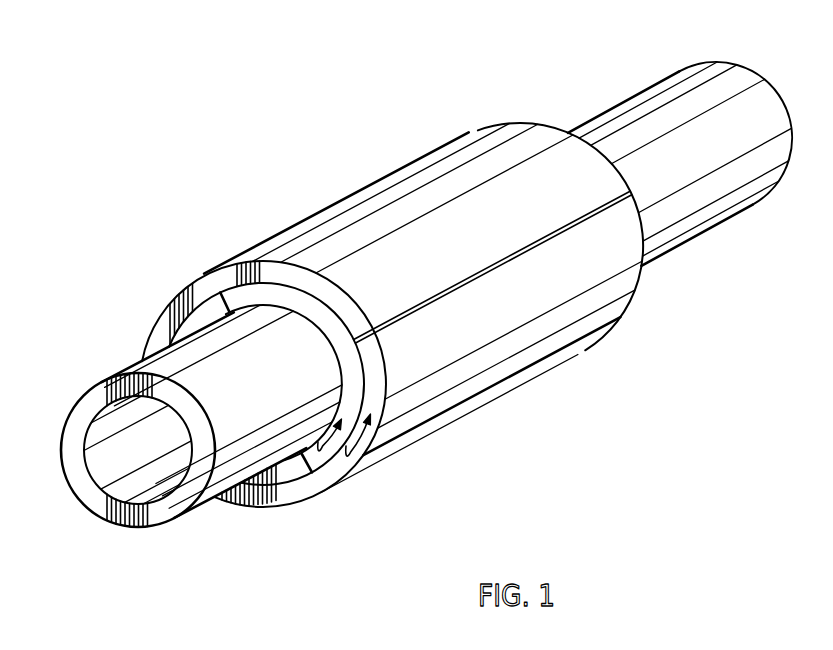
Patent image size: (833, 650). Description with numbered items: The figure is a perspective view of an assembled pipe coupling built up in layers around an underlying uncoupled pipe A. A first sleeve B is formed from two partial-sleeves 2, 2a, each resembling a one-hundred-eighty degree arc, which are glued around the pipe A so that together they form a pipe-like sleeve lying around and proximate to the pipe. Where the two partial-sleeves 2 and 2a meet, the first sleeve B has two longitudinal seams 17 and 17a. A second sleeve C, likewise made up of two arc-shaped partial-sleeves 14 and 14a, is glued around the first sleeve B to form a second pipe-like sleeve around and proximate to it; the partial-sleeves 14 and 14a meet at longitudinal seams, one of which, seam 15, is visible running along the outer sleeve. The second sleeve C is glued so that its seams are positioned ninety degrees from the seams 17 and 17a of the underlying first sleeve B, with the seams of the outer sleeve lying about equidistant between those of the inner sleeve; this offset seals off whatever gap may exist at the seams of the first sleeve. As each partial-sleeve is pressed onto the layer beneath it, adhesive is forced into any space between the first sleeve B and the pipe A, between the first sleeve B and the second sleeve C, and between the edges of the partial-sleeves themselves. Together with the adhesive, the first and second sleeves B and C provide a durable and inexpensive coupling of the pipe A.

The partial-sleeve 14 is at (383, 206).
The partial-sleeve 14a is at (437, 385).
The longitudinal seam 15 is at (490, 271).
The partial-sleeve 2 is at (273, 473).
The partial-sleeve 2a is at (262, 291).
The longitudinal seam 17 is at (300, 455).
The longitudinal seam 17a is at (227, 312).
The pipe A is at (193, 376).
The first sleeve B is at (343, 471).
The second sleeve C is at (358, 456).